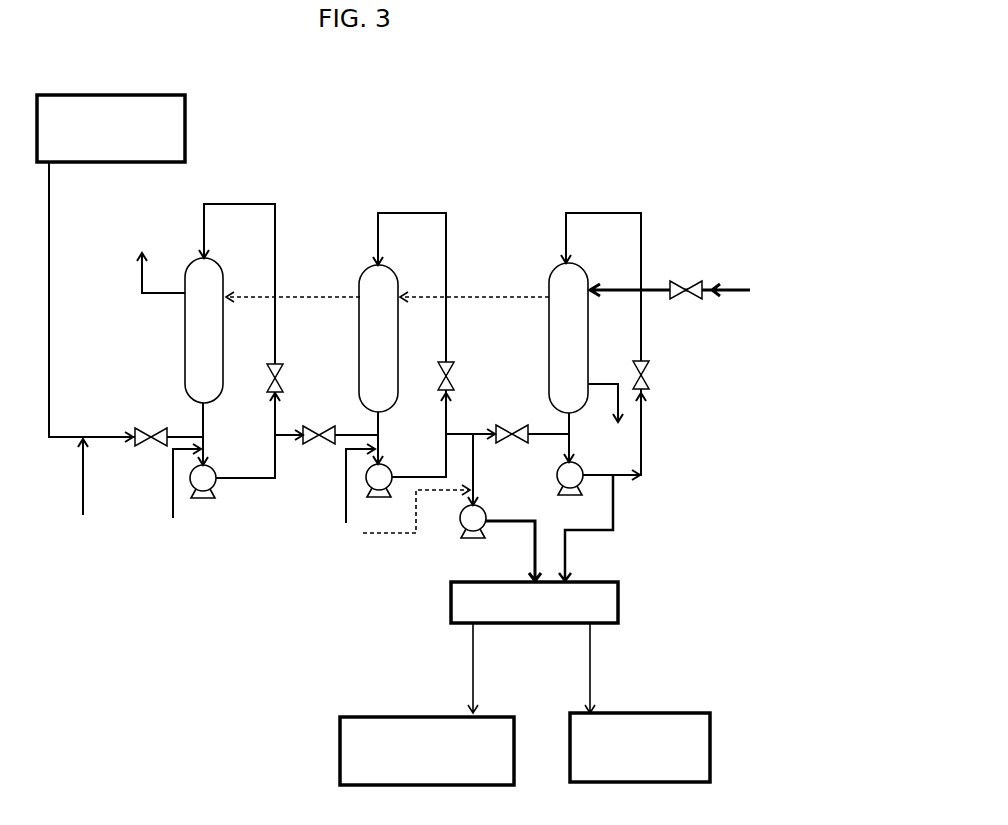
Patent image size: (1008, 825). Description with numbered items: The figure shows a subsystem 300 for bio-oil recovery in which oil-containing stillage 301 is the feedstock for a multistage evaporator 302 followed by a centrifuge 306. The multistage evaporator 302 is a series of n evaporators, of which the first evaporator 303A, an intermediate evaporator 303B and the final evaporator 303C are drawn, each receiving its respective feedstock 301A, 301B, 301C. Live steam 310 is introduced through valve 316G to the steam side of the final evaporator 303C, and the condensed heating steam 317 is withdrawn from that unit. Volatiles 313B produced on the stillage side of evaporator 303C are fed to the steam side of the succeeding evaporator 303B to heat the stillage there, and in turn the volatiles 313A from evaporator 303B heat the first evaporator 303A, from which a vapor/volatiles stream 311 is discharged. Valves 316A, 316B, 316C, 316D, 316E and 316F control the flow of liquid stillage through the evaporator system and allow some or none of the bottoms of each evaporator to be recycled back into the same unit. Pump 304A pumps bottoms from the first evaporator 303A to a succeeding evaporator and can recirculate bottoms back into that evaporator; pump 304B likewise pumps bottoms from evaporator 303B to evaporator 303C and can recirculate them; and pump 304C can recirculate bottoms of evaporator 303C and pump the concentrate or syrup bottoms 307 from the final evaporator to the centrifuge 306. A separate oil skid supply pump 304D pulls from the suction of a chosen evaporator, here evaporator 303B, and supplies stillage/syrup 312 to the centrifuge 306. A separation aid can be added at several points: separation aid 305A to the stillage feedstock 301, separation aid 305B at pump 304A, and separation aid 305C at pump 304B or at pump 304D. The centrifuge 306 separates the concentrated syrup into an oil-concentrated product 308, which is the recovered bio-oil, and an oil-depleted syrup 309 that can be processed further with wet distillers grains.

The subsystem 300 is at (475, 129).
The oil-containing stillage 301 is at (173, 95).
The feedstock to evaporator 303A 301A is at (246, 203).
The feedstock to evaporator 303B 301B is at (402, 211).
The feedstock to evaporator 303C 301C is at (596, 211).
The multistage evaporator 302 is at (282, 530).
The first evaporator 303A is at (183, 351).
The evaporator 303B is at (358, 280).
The final evaporator 303C is at (545, 272).
The pump 304A is at (218, 492).
The pump 304B is at (388, 470).
The pump 304C is at (555, 477).
The oil skid supply pump 304D is at (458, 526).
The separation aid 305A is at (92, 354).
The separation aid 305B is at (174, 495).
The separation aid 305C is at (394, 513).
The centrifuge 306 is at (450, 608).
The bottoms 307 is at (614, 512).
The oil-concentrated product 308 is at (400, 714).
The oil-depleted syrup 309 is at (668, 712).
The steam 310 is at (735, 300).
The vapor/volatiles stream 311 is at (163, 300).
The stillage/syrup 312 is at (477, 473).
The volatiles 313A is at (332, 305).
The volatiles 313B is at (513, 302).
The valve 316A is at (158, 443).
The valve 316B is at (272, 382).
The valve 316C is at (322, 427).
The valve 316D is at (440, 377).
The valve 316E is at (514, 428).
The valve 316F is at (646, 372).
The valve 316G is at (686, 283).
The condensed heating steam 317 is at (608, 414).